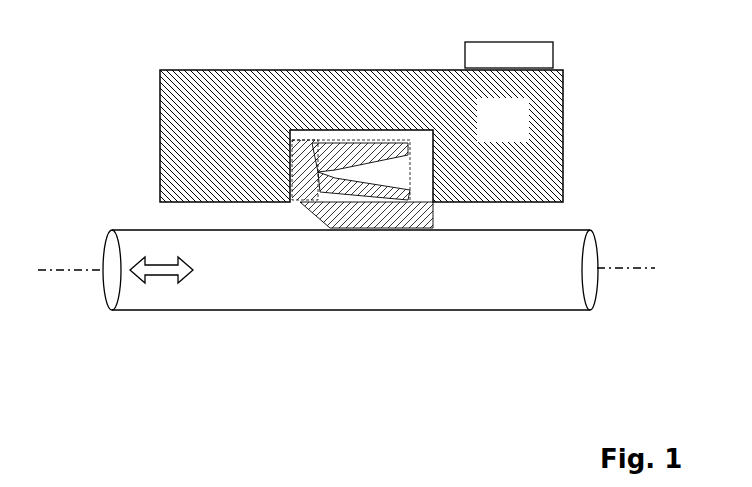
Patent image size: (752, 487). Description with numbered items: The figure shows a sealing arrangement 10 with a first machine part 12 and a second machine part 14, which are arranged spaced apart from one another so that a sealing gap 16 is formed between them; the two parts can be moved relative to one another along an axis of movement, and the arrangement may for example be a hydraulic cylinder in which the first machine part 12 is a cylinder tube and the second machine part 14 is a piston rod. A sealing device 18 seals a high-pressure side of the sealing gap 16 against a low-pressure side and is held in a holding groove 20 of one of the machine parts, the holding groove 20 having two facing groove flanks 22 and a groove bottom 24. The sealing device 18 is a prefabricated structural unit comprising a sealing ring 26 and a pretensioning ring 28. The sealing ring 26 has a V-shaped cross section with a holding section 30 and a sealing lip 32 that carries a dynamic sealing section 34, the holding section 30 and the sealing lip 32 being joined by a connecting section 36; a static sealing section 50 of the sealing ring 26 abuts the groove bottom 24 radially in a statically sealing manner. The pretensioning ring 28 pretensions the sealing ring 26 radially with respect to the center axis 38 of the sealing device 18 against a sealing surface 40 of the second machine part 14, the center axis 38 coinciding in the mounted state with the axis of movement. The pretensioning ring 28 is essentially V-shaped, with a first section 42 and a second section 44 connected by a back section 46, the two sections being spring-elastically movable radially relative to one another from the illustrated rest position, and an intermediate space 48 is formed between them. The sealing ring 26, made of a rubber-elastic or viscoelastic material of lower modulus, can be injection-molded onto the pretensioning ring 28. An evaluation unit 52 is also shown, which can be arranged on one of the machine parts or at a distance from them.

The sealing arrangement 10 is at (624, 111).
The first machine part 12 is at (361, 136).
The second machine part 14 is at (350, 270).
The sealing gap 16 is at (174, 213).
The sealing device 18 is at (300, 170).
The holding groove 20 is at (419, 155).
The groove flanks 22 is at (316, 135).
The groove bottom 24 is at (342, 135).
The sealing ring 26 is at (300, 160).
The pretensioning ring 28 is at (346, 162).
The holding section 30 is at (318, 138).
The sealing lip 32 is at (360, 212).
The sealing section 34 is at (393, 225).
The connecting section 36 is at (300, 188).
The center axis 38 is at (631, 268).
The sealing surface 40 is at (270, 220).
The first section 42 is at (372, 158).
The second section 44 is at (360, 192).
The back section 46 is at (320, 190).
The intermediate space 48 is at (385, 172).
The static sealing section 50 is at (415, 133).
The evaluation unit 52 is at (509, 55).